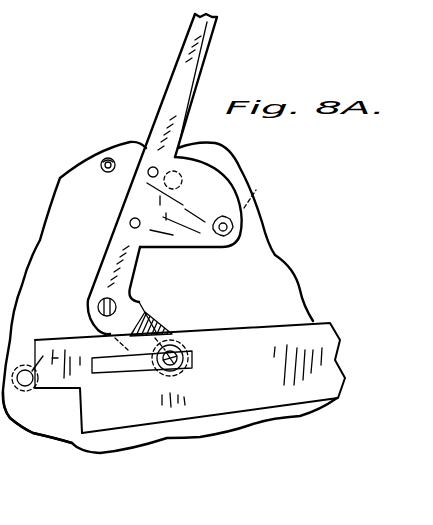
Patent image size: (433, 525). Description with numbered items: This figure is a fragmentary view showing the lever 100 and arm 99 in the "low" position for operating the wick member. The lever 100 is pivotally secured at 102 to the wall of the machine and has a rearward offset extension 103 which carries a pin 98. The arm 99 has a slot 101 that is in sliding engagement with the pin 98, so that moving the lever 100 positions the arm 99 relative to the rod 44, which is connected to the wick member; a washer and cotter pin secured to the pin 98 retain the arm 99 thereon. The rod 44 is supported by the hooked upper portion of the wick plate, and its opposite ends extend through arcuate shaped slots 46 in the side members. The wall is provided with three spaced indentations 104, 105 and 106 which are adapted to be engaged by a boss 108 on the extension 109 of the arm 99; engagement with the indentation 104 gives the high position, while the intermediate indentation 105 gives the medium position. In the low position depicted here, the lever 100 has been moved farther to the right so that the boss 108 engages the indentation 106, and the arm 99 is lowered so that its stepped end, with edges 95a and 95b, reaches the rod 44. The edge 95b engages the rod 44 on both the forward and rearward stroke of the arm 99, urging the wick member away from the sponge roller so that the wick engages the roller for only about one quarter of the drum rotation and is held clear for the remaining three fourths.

The lever 100 is at (190, 70).
The indentation 104 is at (108, 158).
The indentation 105 is at (190, 170).
The indentation 106 is at (267, 190).
The boss 108 is at (240, 226).
The extension 109 is at (175, 211).
The pivot 102 is at (98, 307).
The arcuate shaped slot 46 is at (103, 333).
The rod 44 is at (24, 392).
The rearward offset extension 103 is at (170, 316).
The arm 99 is at (230, 399).
The slot 101 is at (110, 367).
The pin 98 is at (183, 370).
The stop 95a is at (80, 409).
The edge 95b is at (33, 346).